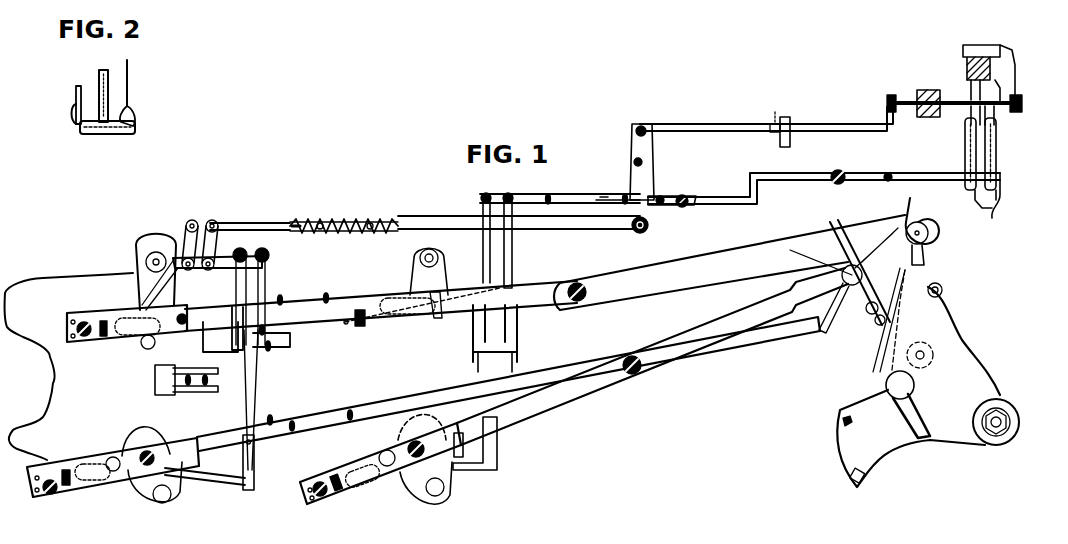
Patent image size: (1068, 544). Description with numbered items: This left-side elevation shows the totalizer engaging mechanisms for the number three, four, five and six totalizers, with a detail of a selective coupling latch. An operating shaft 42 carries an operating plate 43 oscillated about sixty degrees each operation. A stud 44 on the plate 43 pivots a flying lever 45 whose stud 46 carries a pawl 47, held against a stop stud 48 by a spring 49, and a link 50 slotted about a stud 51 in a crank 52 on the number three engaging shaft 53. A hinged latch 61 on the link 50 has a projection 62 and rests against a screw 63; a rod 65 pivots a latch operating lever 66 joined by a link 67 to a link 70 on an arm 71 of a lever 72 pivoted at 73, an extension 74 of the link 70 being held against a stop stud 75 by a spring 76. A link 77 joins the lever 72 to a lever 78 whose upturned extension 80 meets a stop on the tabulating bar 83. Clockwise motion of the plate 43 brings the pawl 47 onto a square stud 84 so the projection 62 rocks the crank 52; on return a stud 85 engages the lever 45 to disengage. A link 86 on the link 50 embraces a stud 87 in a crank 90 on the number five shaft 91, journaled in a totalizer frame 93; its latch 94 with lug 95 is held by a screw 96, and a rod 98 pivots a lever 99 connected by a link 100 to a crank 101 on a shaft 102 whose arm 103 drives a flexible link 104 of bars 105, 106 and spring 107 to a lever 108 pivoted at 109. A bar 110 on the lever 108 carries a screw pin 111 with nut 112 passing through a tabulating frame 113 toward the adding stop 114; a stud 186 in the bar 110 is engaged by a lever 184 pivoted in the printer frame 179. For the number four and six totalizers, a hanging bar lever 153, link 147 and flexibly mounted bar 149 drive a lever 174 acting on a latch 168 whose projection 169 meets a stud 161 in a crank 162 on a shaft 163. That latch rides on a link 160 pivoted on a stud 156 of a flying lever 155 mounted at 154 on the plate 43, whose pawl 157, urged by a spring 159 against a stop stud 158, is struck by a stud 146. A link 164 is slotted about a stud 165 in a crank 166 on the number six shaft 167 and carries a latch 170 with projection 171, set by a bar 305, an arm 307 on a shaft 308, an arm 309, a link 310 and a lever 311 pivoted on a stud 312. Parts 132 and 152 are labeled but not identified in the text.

In FIG. 1, the operating shaft 42 is at (994, 440).
In FIG. 1, the operating plate 43 is at (980, 374).
In FIG. 1, the stud 44 is at (934, 352).
In FIG. 1, the flying lever 45 is at (932, 336).
In FIG. 1, the stud 46 is at (926, 228).
In FIG. 1, the pawl 47 is at (892, 234).
In FIG. 1, the stop stud 48 is at (926, 258).
In FIG. 1, the spring 49 is at (932, 236).
In FIG. 2, the link 50 is at (104, 70).
In FIG. 1, the link 50 is at (704, 254).
In FIG. 1, the stud 51 is at (442, 298).
In FIG. 1, the crank 52 is at (412, 272).
In FIG. 1, the totalizer engaging shaft 53 is at (420, 254).
In FIG. 2, the hinged latch 61 is at (76, 92).
In FIG. 1, the hinged latch 61 is at (390, 330).
In FIG. 1, the projection 62 is at (412, 318).
In FIG. 1, the screw 63 is at (444, 326).
In FIG. 2, the rod 65 is at (124, 104).
In FIG. 1, the rod 65 is at (520, 334).
In FIG. 2, the latch operating lever 66 is at (113, 133).
In FIG. 1, the latch operating lever 66 is at (500, 354).
In FIG. 2, the link 67 is at (130, 74).
In FIG. 1, the link 67 is at (511, 258).
In FIG. 1, the link 70 is at (536, 193).
In FIG. 1, the arm 71 is at (722, 197).
In FIG. 1, the lever 72 is at (862, 172).
In FIG. 1, the pivot 73 is at (838, 170).
In FIG. 1, the extension 74 is at (650, 222).
In FIG. 1, the stop stud 75 is at (652, 196).
In FIG. 1, the spring 76 is at (600, 198).
In FIG. 1, the link 77 is at (998, 158).
In FIG. 1, the lever 78 is at (996, 116).
In FIG. 1, the upturned extension 80 is at (1000, 84).
In FIG. 1, the tabulating bar 83 is at (965, 58).
In FIG. 1, the square stud 84 is at (840, 432).
In FIG. 1, the stud 85 is at (940, 286).
In FIG. 1, the link 86 is at (340, 300).
In FIG. 1, the stud 87 is at (145, 347).
In FIG. 1, the crank 90 is at (146, 298).
In FIG. 1, the No. 5 totalizer engaging shaft 91 is at (155, 250).
In FIG. 1, the totalizer frame 93 is at (108, 280).
In FIG. 1, the hinged latch 94 is at (91, 339).
In FIG. 1, the lug 95 is at (122, 316).
In FIG. 1, the screw 96 is at (183, 313).
In FIG. 1, the rod 98 is at (258, 350).
In FIG. 1, the lever 99 is at (198, 380).
In FIG. 1, the link 100 is at (250, 290).
In FIG. 1, the crank 101 is at (228, 256).
In FIG. 1, the shaft 102 is at (155, 271).
In FIG. 1, the arm 103 is at (188, 220).
In FIG. 1, the flexible link 104 is at (336, 218).
In FIG. 1, the bar 105 is at (290, 222).
In FIG. 1, the bar 106 is at (447, 214).
In FIG. 1, the spring 107 is at (344, 227).
In FIG. 1, the lever 108 is at (652, 190).
In FIG. 1, the pivot 109 is at (634, 162).
In FIG. 1, the bar 110 is at (688, 128).
In FIG. 1, the adjustable screw pin 111 is at (968, 88).
In FIG. 1, the nut 112 is at (890, 100).
In FIG. 1, the tabulating frame 113 is at (930, 90).
In FIG. 1, the No. 5 totalizer adding stop 114 is at (1020, 96).
In FIG. 1, the bracket 132 is at (1000, 190).
In FIG. 1, the stud 146 is at (850, 476).
In FIG. 1, the link 147 is at (964, 140).
In FIG. 1, the flexibly mounted bar 149 is at (497, 188).
In FIG. 1, the hook 152 is at (1019, 203).
In FIG. 1, the hanging bar lever 153 is at (970, 118).
In FIG. 1, the pivot 154 is at (888, 386).
In FIG. 1, the flying lever 155 is at (878, 345).
In FIG. 1, the stud 156 is at (838, 276).
In FIG. 1, the pawl 157 is at (820, 338).
In FIG. 1, the stop stud 158 is at (885, 304).
In FIG. 1, the spring 159 is at (862, 244).
In FIG. 1, the link 160 is at (660, 345).
In FIG. 1, the stud 161 is at (386, 454).
In FIG. 1, the crank 162 is at (424, 432).
In FIG. 1, the shaft 163 is at (435, 498).
In FIG. 1, the link 164 is at (350, 406).
In FIG. 1, the stud 165 is at (114, 458).
In FIG. 1, the crank 166 is at (142, 432).
In FIG. 1, the No. 6 totalizer engaging shaft 167 is at (163, 504).
In FIG. 1, the latch 168 is at (388, 468).
In FIG. 1, the projection 169 is at (368, 486).
In FIG. 1, the hinged latch 170 is at (124, 482).
In FIG. 1, the projection 171 is at (96, 478).
In FIG. 1, the lever 174 is at (478, 472).
In FIG. 1, the right-hand printer frame 179 is at (482, 248).
In FIG. 1, the lever 184 is at (786, 116).
In FIG. 1, the stud 186 is at (766, 113).
In FIG. 1, the bar 305 is at (252, 222).
In FIG. 1, the arm 307 is at (218, 222).
In FIG. 1, the shaft 308 is at (201, 275).
In FIG. 1, the arm 309 is at (266, 250).
In FIG. 1, the link 310 is at (258, 402).
In FIG. 1, the lever 311 is at (212, 486).
In FIG. 1, the stud 312 is at (254, 472).